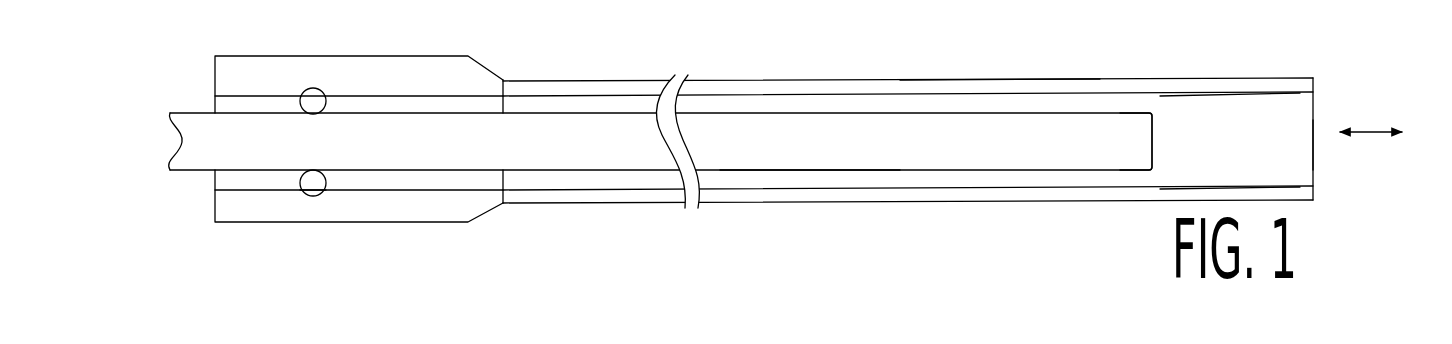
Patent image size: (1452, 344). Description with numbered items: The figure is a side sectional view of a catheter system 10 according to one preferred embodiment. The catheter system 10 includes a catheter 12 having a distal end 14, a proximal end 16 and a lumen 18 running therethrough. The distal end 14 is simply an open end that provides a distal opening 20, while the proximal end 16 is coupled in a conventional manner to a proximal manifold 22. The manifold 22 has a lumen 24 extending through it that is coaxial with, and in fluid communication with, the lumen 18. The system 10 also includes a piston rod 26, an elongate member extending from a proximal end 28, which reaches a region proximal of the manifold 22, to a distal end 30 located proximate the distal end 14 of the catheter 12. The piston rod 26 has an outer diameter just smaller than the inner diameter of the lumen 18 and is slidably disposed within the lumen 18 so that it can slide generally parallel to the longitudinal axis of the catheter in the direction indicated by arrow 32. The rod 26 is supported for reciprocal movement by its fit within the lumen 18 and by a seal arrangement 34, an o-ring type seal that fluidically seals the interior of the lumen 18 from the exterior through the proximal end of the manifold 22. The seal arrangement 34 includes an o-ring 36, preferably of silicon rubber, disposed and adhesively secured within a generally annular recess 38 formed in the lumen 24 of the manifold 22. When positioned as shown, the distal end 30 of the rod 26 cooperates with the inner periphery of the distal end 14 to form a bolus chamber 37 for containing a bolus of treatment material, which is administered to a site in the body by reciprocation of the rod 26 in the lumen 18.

The catheter system 10 is at (788, 146).
The catheter 12 is at (745, 81).
The distal end 14 is at (1283, 77).
The proximal end 16 is at (522, 80).
The lumen 18 is at (930, 95).
The distal opening 20 is at (1314, 143).
The proximal manifold 22 is at (375, 63).
The lumen 24 is at (258, 98).
The piston rod 26 is at (798, 173).
The proximal end 28 is at (185, 122).
The distal end 30 is at (1122, 125).
The arrow 32 is at (1372, 130).
The seal arrangement 34 is at (315, 200).
The o-ring 36 is at (303, 177).
The bolus chamber 37 is at (1198, 123).
The annular recess 38 is at (324, 194).